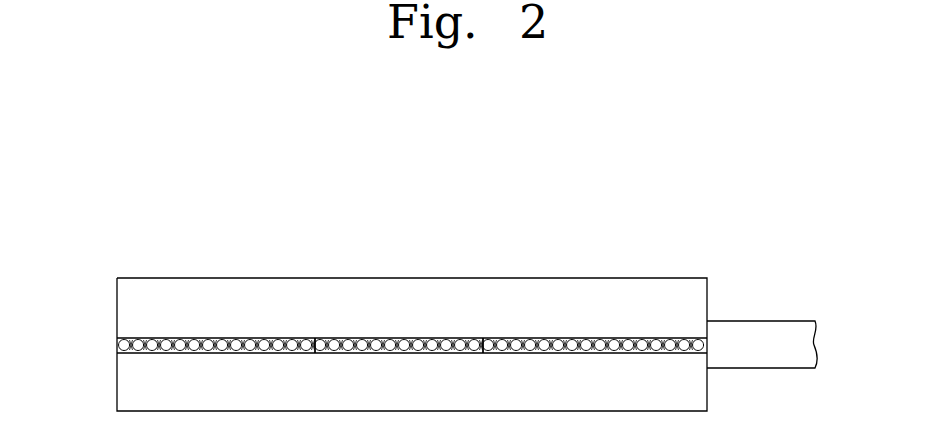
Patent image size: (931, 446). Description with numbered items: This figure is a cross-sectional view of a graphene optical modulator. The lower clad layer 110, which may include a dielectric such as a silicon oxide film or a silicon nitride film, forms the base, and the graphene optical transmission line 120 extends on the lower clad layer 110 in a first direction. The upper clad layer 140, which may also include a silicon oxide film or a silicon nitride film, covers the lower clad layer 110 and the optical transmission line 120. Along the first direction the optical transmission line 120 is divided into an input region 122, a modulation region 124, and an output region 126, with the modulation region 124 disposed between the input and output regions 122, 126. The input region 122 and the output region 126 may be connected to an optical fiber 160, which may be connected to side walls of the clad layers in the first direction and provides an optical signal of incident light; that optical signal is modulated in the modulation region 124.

The lower clad layer 110 is at (130, 378).
The graphene optical transmission line 120 is at (130, 342).
The input region 122 is at (315, 272).
The modulation region 124 is at (483, 272).
The output region 126 is at (707, 272).
The upper clad layer 140 is at (130, 305).
The optical fiber 160 is at (760, 332).